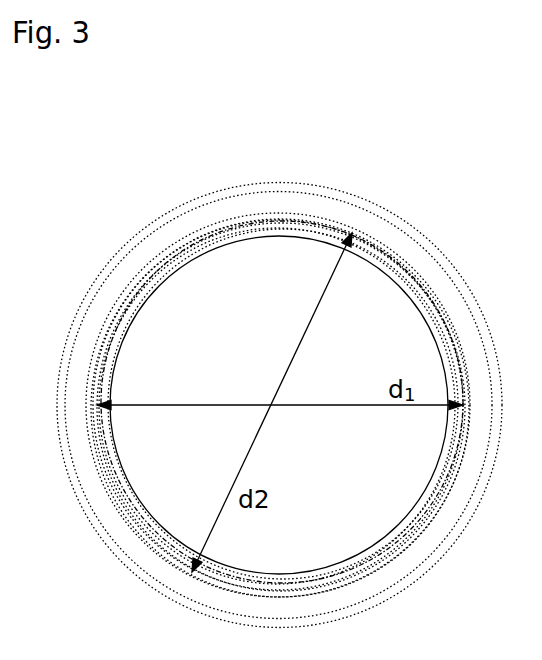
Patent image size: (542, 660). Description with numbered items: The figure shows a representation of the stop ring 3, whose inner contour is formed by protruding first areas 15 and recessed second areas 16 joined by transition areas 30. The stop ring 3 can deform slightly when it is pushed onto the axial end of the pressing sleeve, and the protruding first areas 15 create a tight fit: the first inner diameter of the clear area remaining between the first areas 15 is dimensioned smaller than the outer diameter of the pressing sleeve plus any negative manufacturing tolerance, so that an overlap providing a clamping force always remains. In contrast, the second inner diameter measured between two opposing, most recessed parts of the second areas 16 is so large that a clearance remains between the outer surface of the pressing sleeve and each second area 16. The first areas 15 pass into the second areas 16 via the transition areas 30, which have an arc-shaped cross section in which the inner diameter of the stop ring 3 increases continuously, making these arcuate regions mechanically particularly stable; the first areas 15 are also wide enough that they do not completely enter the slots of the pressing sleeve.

The stop ring 3 is at (438, 268).
The first areas 15 is at (145, 277).
The second areas 16 is at (210, 232).
The transition areas 30 is at (160, 257).